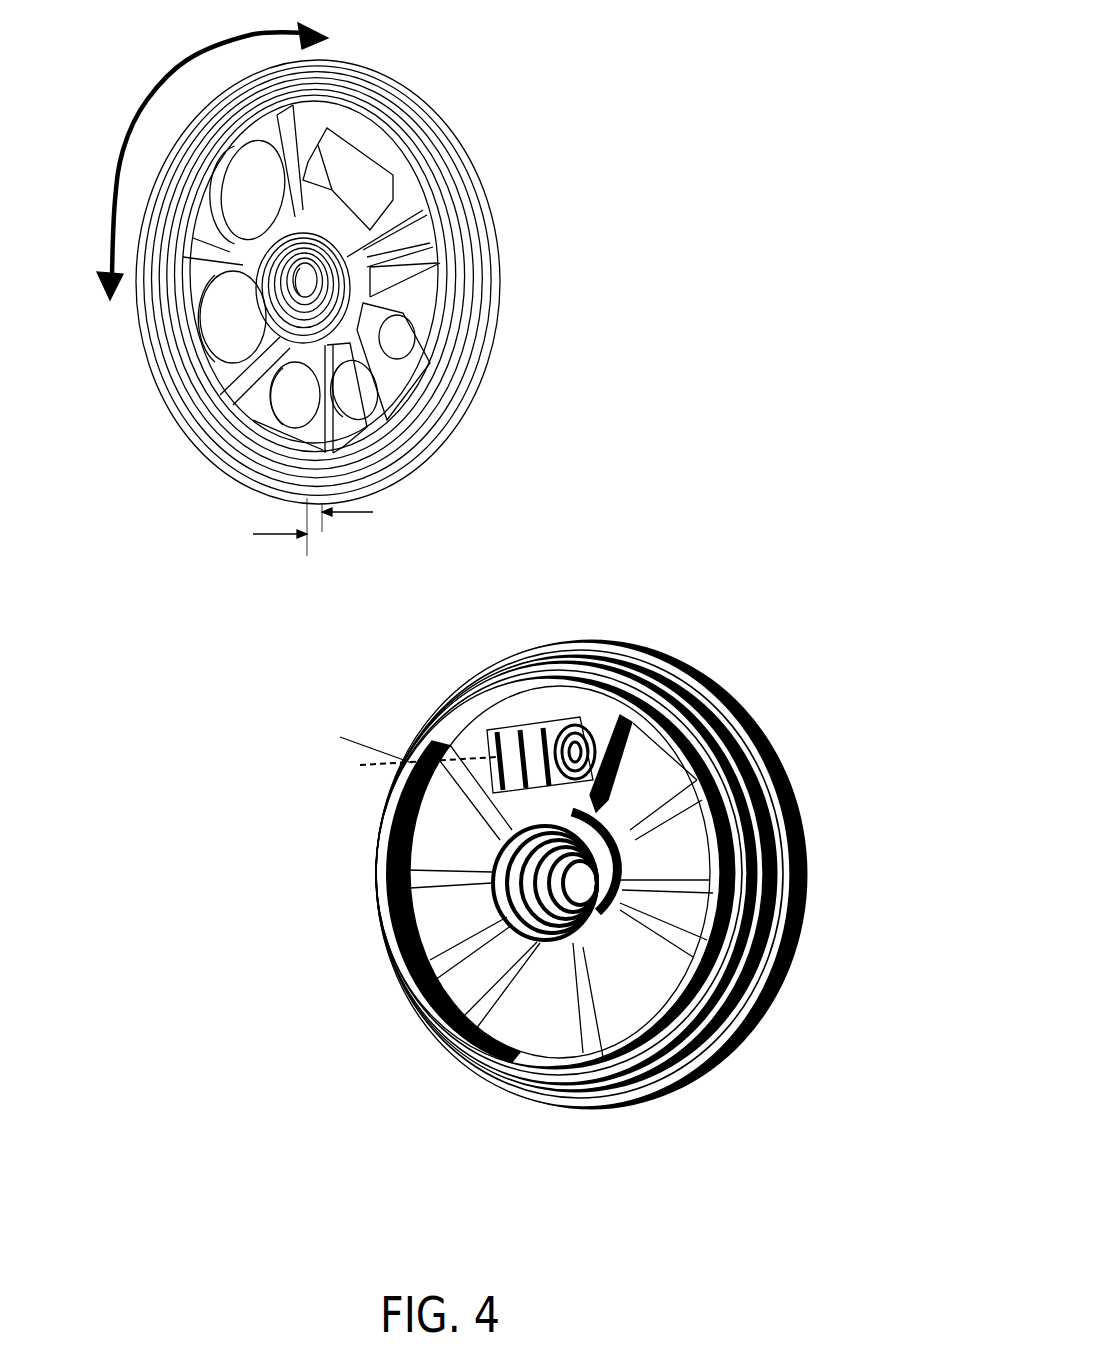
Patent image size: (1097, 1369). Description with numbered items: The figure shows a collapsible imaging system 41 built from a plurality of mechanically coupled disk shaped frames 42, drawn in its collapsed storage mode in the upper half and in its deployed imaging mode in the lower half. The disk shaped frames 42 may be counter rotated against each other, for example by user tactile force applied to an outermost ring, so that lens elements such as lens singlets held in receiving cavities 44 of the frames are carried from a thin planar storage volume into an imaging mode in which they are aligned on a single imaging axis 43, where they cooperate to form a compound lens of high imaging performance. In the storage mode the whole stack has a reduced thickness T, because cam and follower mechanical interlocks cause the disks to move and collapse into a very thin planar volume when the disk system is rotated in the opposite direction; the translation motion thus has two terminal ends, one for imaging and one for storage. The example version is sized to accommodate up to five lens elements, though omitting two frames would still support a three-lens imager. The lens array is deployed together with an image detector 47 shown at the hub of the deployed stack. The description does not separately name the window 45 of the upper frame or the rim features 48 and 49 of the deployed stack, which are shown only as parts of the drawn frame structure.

The collapsible imaging system 41 is at (338, 293).
The disk shaped frames 42 is at (433, 163).
The imaging axis 43 is at (340, 737).
The receiving cavities 44 is at (352, 173).
The window 45 is at (380, 427).
The image detector 47 is at (575, 755).
The rim rings 48 is at (733, 757).
The rim 49 is at (575, 829).
The reduced thickness T is at (313, 535).